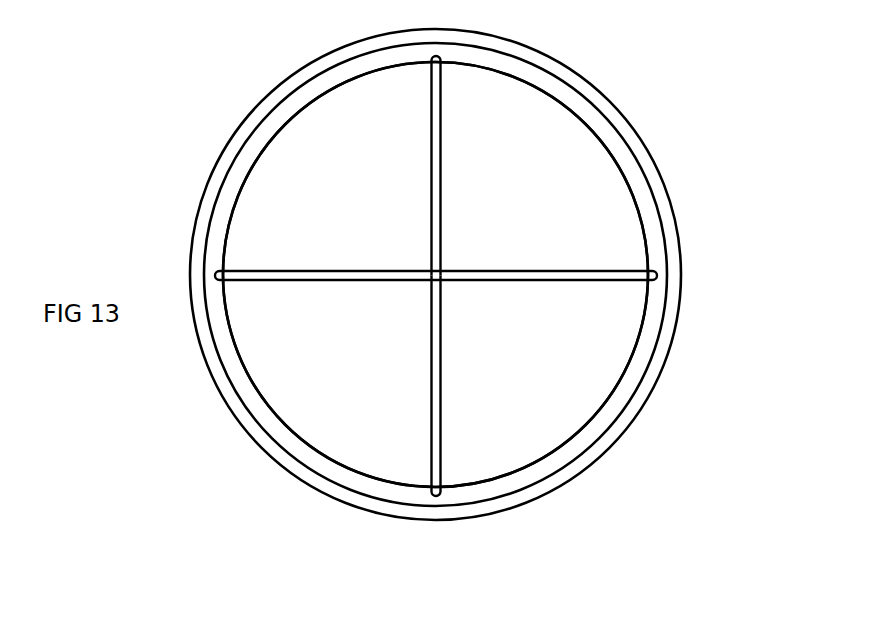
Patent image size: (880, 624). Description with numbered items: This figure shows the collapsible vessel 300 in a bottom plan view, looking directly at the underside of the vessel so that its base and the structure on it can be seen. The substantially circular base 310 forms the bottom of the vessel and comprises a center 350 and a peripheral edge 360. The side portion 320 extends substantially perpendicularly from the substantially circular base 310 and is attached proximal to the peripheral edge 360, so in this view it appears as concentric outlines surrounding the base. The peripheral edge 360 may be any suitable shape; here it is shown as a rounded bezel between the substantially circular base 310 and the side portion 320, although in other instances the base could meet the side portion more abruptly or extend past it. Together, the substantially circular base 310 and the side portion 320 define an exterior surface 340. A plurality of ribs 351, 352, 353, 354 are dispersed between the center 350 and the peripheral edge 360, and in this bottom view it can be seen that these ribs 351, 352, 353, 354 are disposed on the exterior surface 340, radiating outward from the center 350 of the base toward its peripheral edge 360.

The collapsible vessel 300 is at (206, 98).
The substantially circular base 310 is at (315, 377).
The side portion 320 is at (323, 66).
The exterior surface 340 is at (362, 420).
The center 350 is at (436, 274).
The rib 351 is at (270, 278).
The rib 352 is at (433, 176).
The rib 353 is at (593, 278).
The rib 354 is at (438, 449).
The peripheral edge 360 is at (638, 195).